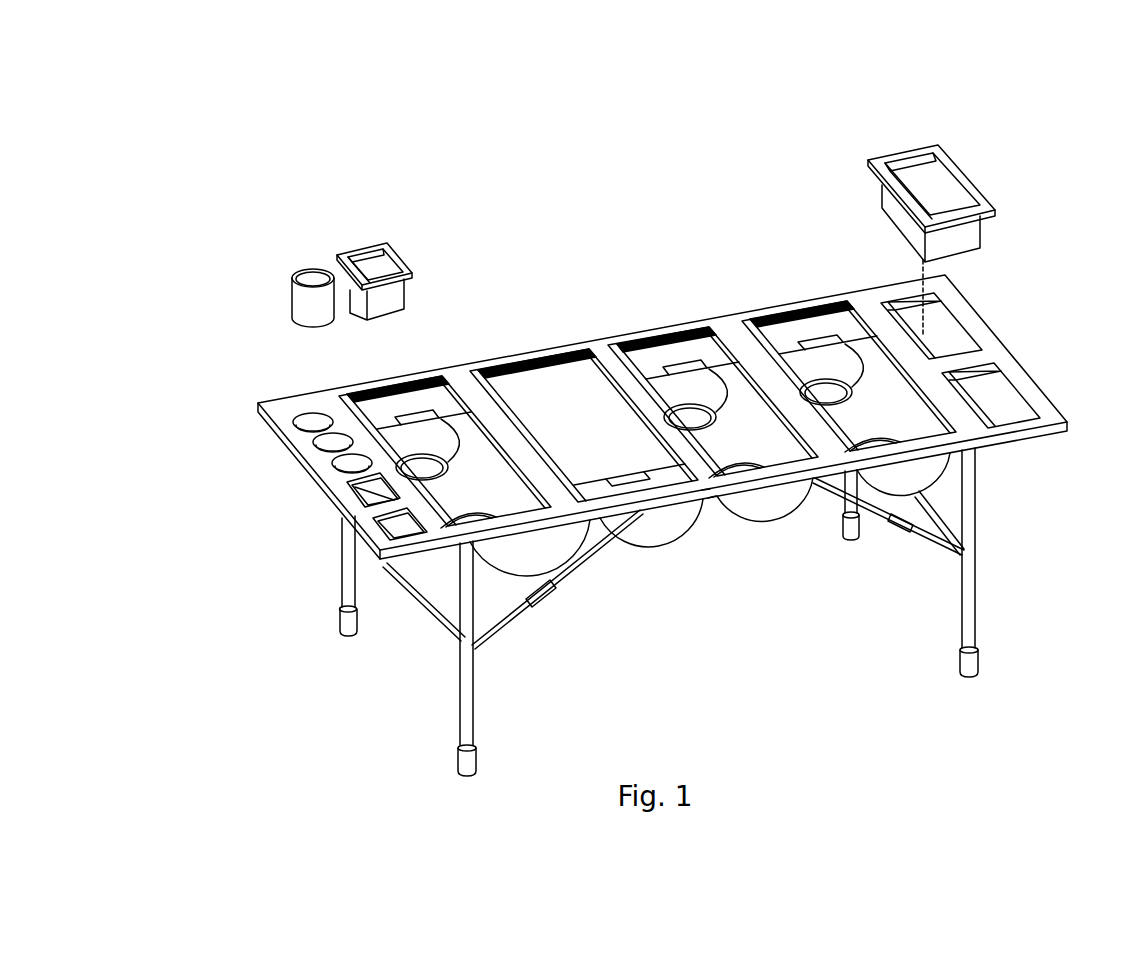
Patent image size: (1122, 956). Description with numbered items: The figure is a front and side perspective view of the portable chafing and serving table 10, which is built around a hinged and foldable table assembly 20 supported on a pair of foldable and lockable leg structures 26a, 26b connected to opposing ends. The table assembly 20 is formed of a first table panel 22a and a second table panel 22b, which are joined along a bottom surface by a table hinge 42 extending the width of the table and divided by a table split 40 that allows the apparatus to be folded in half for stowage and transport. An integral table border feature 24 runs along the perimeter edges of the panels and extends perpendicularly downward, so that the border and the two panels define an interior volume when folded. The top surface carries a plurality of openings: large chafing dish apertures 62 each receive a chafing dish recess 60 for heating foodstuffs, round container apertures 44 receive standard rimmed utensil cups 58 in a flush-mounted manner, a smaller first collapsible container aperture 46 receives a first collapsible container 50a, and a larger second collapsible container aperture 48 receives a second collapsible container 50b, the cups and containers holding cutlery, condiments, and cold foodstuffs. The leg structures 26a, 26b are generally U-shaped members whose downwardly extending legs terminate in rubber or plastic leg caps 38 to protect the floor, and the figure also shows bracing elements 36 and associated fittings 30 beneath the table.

The portable chafing and serving table 10 is at (985, 124).
The table assembly 20 is at (259, 404).
The first table panel 22a is at (575, 499).
The second table panel 22b is at (877, 297).
The table border feature 24 is at (266, 422).
The first leg structure 26a is at (350, 558).
The second leg structure 26b is at (843, 505).
The brace sleeve 30 is at (568, 577).
The cross brace 36 is at (413, 597).
The leg cap 38 is at (348, 618).
The table split 40 is at (705, 491).
The table hinge 42 is at (711, 498).
The round container aperture 44 is at (334, 470).
The first collapsible container aperture 46 is at (387, 532).
The second collapsible container aperture 48 is at (1013, 373).
The first collapsible container 50a is at (359, 246).
The second collapsible container 50b is at (974, 236).
The utensil cup 58 is at (312, 303).
The chafing dish recess 60 is at (417, 384).
The chafing dish aperture 62 is at (597, 380).